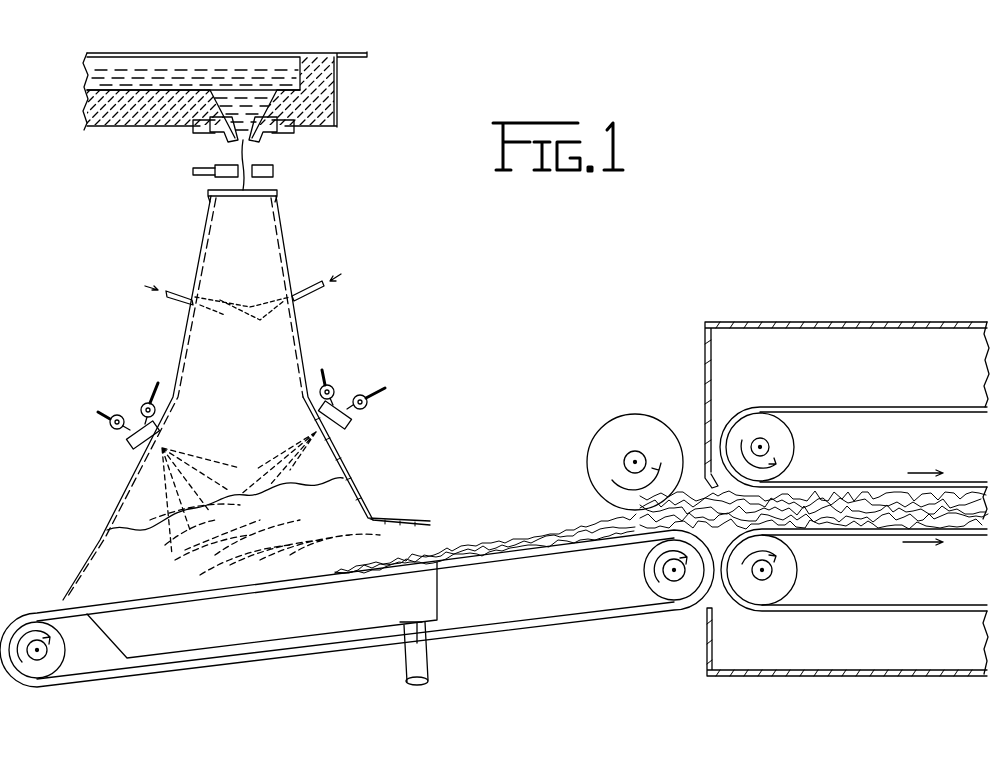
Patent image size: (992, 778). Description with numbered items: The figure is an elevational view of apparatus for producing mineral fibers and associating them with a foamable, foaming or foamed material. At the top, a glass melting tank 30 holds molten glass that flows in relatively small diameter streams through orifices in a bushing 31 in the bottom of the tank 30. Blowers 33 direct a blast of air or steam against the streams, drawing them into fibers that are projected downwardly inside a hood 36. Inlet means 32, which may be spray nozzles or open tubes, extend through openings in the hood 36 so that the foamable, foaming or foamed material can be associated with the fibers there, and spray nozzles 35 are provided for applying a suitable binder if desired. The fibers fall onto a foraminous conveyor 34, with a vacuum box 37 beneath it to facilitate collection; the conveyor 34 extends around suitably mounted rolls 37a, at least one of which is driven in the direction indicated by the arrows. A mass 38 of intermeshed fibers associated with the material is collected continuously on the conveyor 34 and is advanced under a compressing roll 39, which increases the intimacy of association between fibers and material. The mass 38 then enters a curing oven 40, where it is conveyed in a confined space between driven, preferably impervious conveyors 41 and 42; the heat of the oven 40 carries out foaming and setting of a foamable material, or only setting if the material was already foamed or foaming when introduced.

The glass melting tank 30 is at (352, 95).
The bushing 31 is at (262, 133).
The inlet means 32 is at (342, 435).
The blowers 33 is at (273, 172).
The foraminous conveyor 34 is at (512, 653).
The spray nozzles 35 is at (312, 287).
The hood 36 is at (295, 313).
The vacuum box 37 is at (437, 608).
The rolls 37a is at (653, 607).
The mass 38 is at (516, 518).
The compressing roll 39 is at (645, 395).
The curing oven 40 is at (825, 322).
The conveyor 41 is at (853, 613).
The conveyor 42 is at (882, 407).